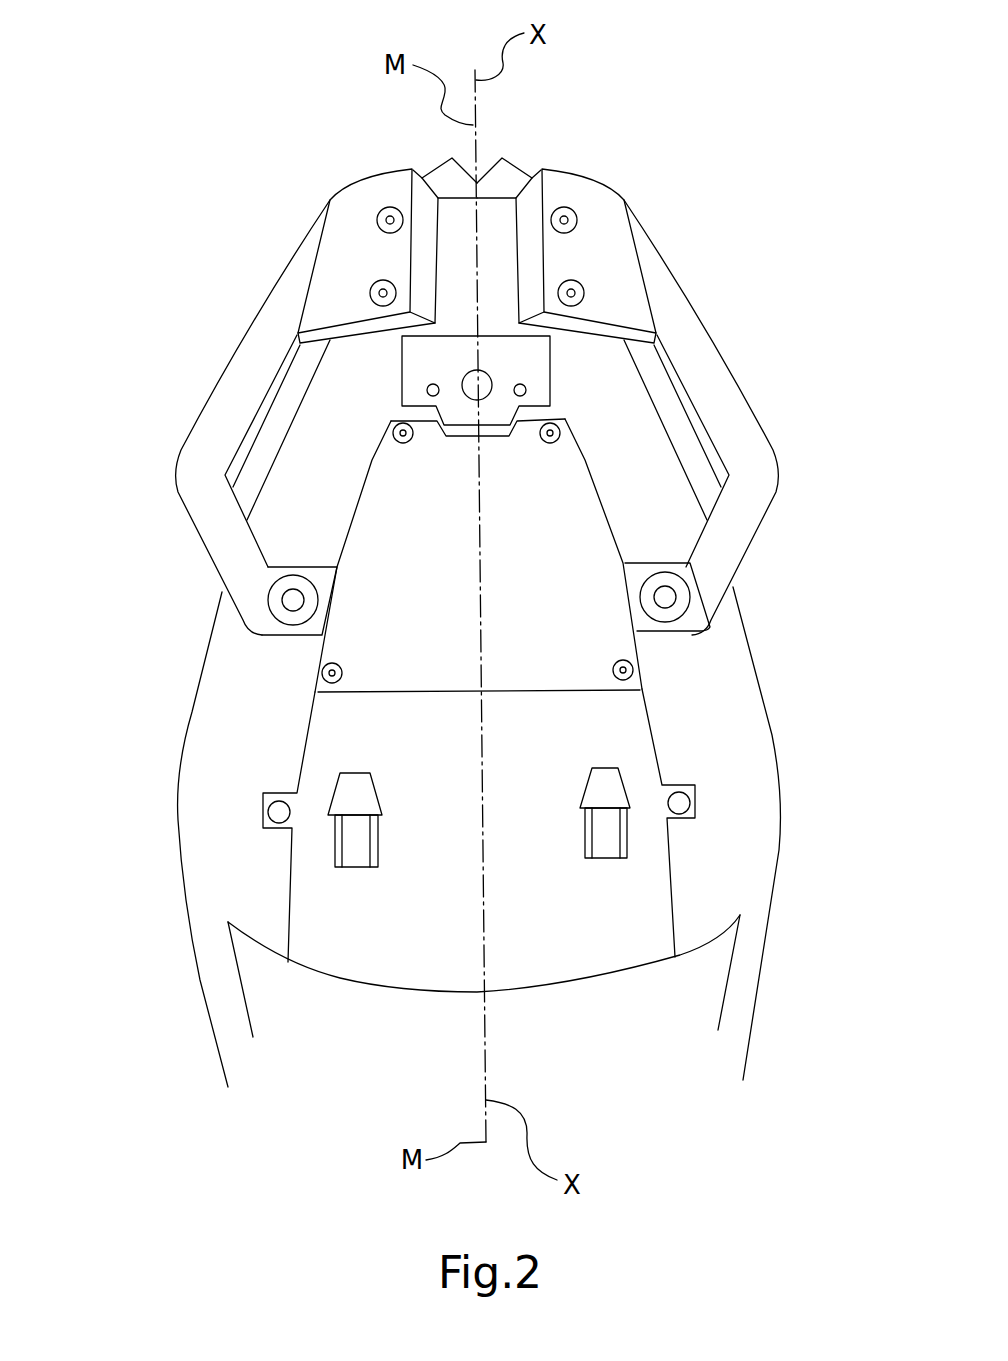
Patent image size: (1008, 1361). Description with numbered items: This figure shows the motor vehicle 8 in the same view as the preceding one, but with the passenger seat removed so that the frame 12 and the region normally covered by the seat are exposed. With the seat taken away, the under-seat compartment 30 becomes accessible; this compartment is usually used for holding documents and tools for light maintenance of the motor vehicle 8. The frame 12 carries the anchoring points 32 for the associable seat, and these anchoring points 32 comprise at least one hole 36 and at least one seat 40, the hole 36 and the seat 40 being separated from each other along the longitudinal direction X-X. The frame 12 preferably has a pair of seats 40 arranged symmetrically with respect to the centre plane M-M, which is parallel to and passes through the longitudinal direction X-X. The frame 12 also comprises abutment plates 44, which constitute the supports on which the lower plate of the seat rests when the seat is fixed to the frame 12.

The motor vehicle 8 is at (172, 414).
The frame 12 is at (642, 717).
The under-seat compartment 30 is at (395, 594).
The anchoring points 32 is at (478, 608).
The hole 36 is at (493, 380).
The seat 40 is at (337, 842).
The abutment plates 44 is at (393, 433).